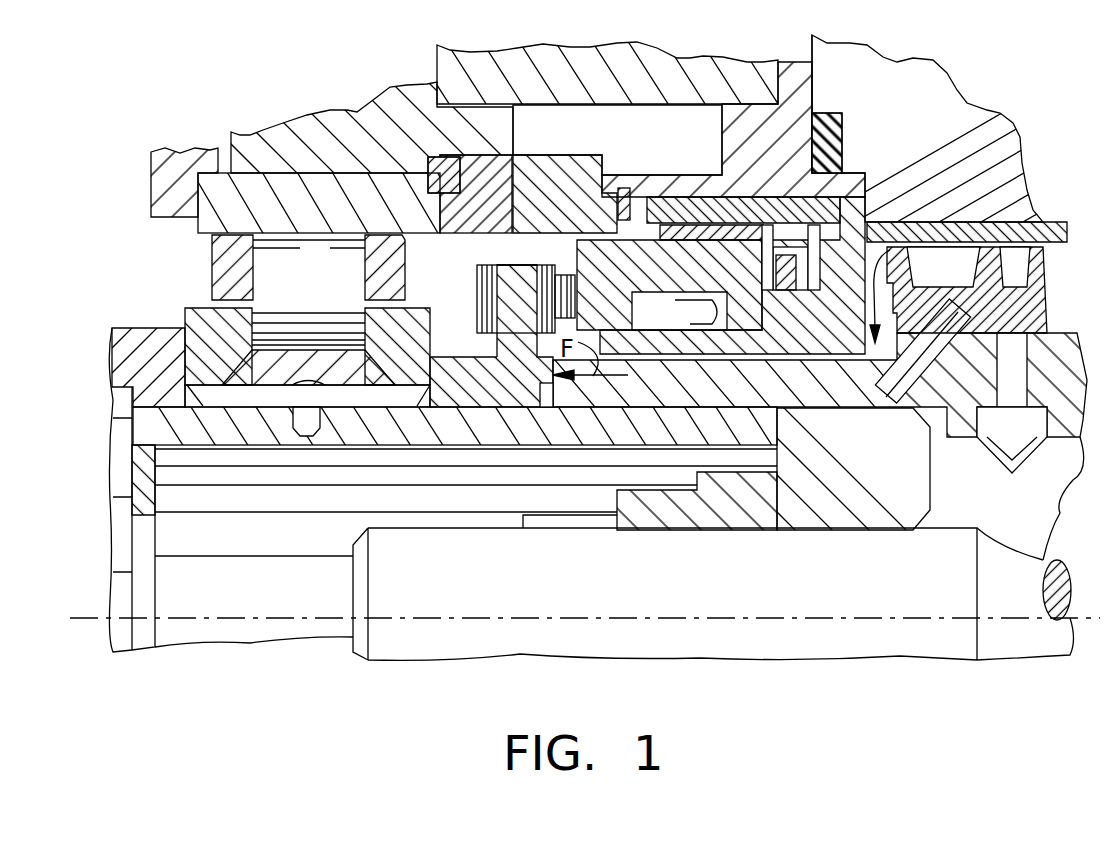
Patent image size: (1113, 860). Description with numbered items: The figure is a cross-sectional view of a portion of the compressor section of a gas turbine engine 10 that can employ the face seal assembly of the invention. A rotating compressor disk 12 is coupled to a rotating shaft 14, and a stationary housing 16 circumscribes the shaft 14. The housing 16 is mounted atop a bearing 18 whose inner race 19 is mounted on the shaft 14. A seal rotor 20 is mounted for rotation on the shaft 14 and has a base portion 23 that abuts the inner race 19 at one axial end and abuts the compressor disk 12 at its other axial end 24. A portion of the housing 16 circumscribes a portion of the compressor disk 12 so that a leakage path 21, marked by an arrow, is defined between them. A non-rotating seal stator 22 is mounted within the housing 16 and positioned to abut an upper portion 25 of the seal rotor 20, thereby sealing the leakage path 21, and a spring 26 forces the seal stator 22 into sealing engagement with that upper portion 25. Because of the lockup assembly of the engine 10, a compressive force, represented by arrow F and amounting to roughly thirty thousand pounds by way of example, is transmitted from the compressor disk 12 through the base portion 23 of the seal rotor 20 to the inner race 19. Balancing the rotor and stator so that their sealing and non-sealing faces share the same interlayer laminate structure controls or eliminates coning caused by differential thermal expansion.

The gas turbine engine 10 is at (145, 684).
The compressor disk 12 is at (716, 393).
The shaft 14 is at (905, 468).
The housing 16 is at (812, 80).
The bearing 18 is at (225, 265).
The inner race 19 is at (200, 322).
The seal rotor 20 is at (475, 292).
The leakage path 21 is at (900, 255).
The seal stator 22 is at (656, 280).
The base portion 23 is at (470, 400).
The other axial end 24 is at (523, 363).
The upper portion 25 is at (523, 265).
The spring 26 is at (827, 280).